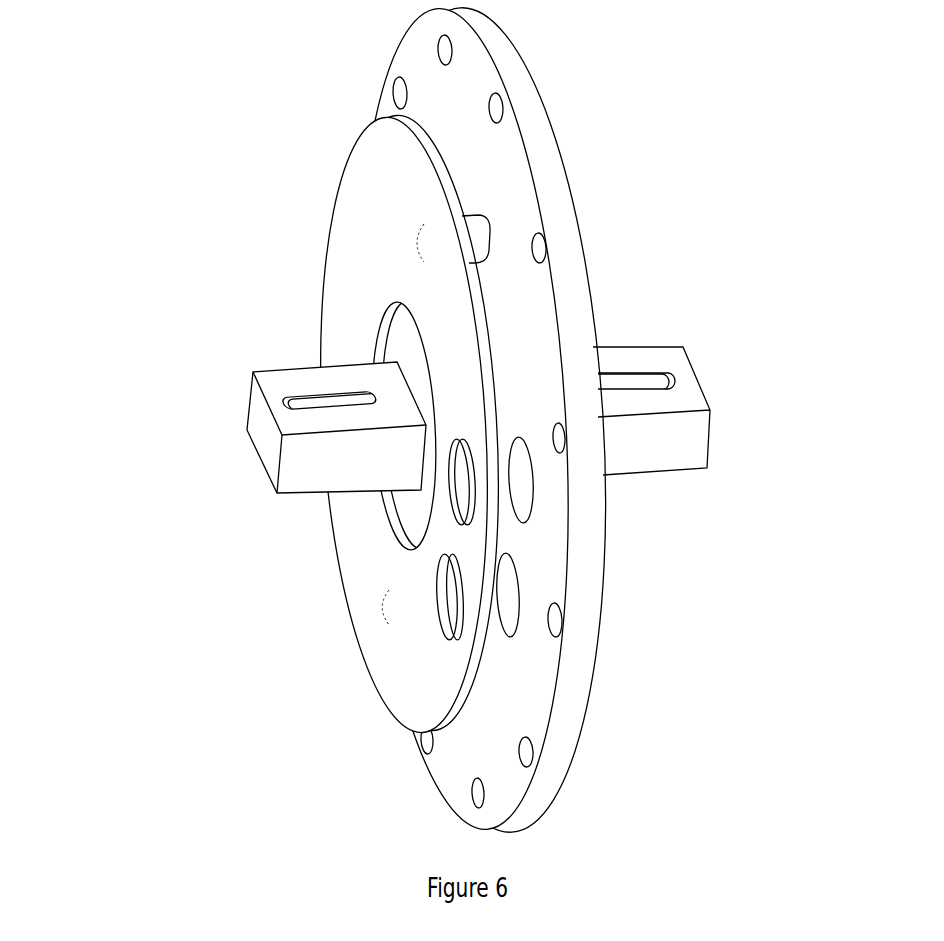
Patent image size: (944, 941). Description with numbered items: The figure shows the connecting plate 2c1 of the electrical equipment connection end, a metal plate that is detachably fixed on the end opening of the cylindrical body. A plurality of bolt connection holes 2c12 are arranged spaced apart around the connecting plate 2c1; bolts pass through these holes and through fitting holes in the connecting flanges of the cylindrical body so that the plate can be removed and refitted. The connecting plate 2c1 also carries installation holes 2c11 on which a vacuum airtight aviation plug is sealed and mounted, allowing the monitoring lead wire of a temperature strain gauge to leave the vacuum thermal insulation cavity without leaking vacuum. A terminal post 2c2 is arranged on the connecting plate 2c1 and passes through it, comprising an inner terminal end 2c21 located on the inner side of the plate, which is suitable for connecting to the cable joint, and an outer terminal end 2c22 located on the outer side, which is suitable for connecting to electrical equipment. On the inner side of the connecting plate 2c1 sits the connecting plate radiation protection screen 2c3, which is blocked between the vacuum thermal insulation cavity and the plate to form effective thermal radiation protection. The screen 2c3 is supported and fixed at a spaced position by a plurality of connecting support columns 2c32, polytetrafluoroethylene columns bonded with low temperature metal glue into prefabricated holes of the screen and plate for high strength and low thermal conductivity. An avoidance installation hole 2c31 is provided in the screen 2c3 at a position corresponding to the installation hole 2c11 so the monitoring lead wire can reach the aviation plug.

The connecting plate 2c1 is at (449, 420).
The installation hole 2c11 is at (513, 600).
The bolt connection hole 2c12 is at (531, 749).
The terminal post 2c2 is at (449, 348).
The inner terminal end 2c21 is at (280, 388).
The outer terminal end 2c22 is at (682, 447).
The connecting plate radiation protection screen 2c3 is at (449, 411).
The avoidance installation hole 2c31 is at (443, 597).
The connecting support column 2c32 is at (472, 237).